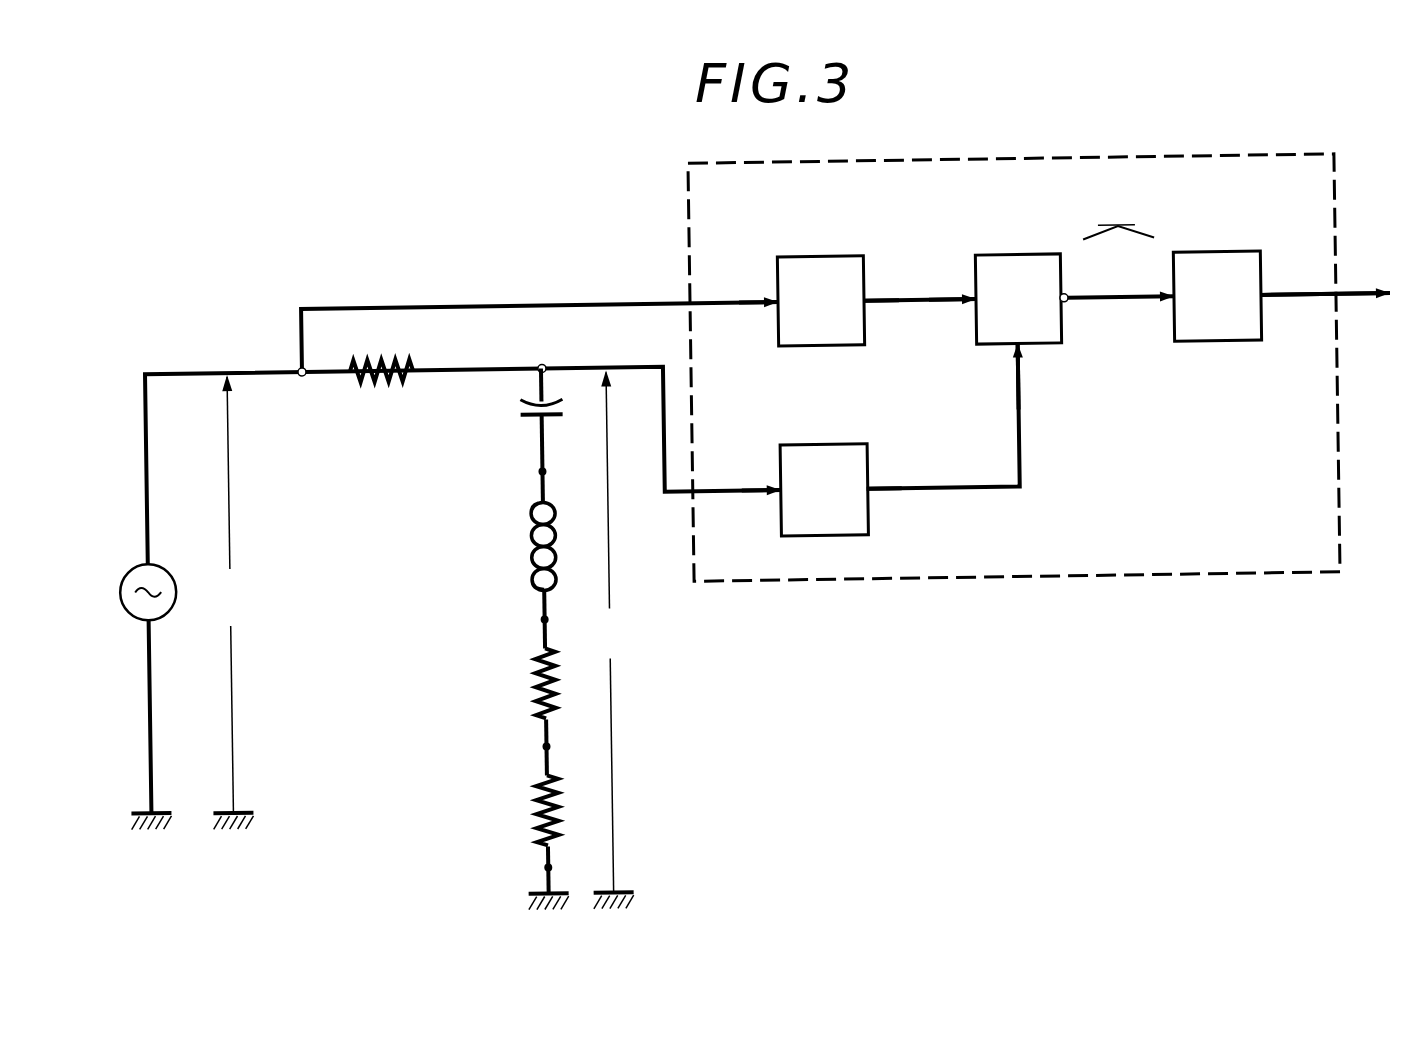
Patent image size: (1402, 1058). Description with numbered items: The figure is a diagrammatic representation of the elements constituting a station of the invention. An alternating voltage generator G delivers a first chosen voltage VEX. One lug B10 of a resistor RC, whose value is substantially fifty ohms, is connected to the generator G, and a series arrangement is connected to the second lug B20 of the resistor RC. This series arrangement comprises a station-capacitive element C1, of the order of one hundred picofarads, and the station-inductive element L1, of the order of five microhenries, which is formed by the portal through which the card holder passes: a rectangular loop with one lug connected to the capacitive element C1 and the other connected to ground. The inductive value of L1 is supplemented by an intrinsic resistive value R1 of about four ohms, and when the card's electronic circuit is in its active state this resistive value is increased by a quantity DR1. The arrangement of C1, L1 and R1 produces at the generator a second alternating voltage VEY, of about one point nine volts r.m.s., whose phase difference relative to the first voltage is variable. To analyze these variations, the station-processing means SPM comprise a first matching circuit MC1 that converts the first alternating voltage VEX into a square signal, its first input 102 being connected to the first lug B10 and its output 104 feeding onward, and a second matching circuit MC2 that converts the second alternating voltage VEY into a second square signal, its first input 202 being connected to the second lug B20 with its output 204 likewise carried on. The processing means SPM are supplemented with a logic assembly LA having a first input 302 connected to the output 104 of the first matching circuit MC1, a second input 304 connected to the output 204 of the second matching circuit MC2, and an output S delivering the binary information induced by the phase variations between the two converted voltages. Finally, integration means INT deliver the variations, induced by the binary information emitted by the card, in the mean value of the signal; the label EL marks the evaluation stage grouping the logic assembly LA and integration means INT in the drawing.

The alternating voltage generator G is at (118, 590).
The first chosen voltage VEX is at (237, 602).
The second alternating voltage VEY is at (607, 639).
The resistor RC is at (380, 362).
The lug B10 is at (302, 378).
The second lug B20 is at (542, 366).
The station-capacitive element C1 is at (519, 411).
The station-inductive element L1 is at (528, 551).
The intrinsic resistive value R1 is at (531, 690).
The quantity of resistance increase DR1 is at (530, 816).
The station-processing means SPM is at (985, 579).
The first matching circuit MC1 is at (820, 301).
The second matching circuit MC2 is at (824, 490).
The logic assembly LA is at (1021, 299).
The integration means INT is at (1217, 296).
The evaluation logic EL is at (1118, 217).
The first input 102 is at (777, 305).
The output 104 is at (867, 306).
The first input 202 is at (777, 494).
The output 204 is at (868, 496).
The first input 302 is at (974, 312).
The second input 304 is at (1024, 362).
The output S is at (1264, 318).